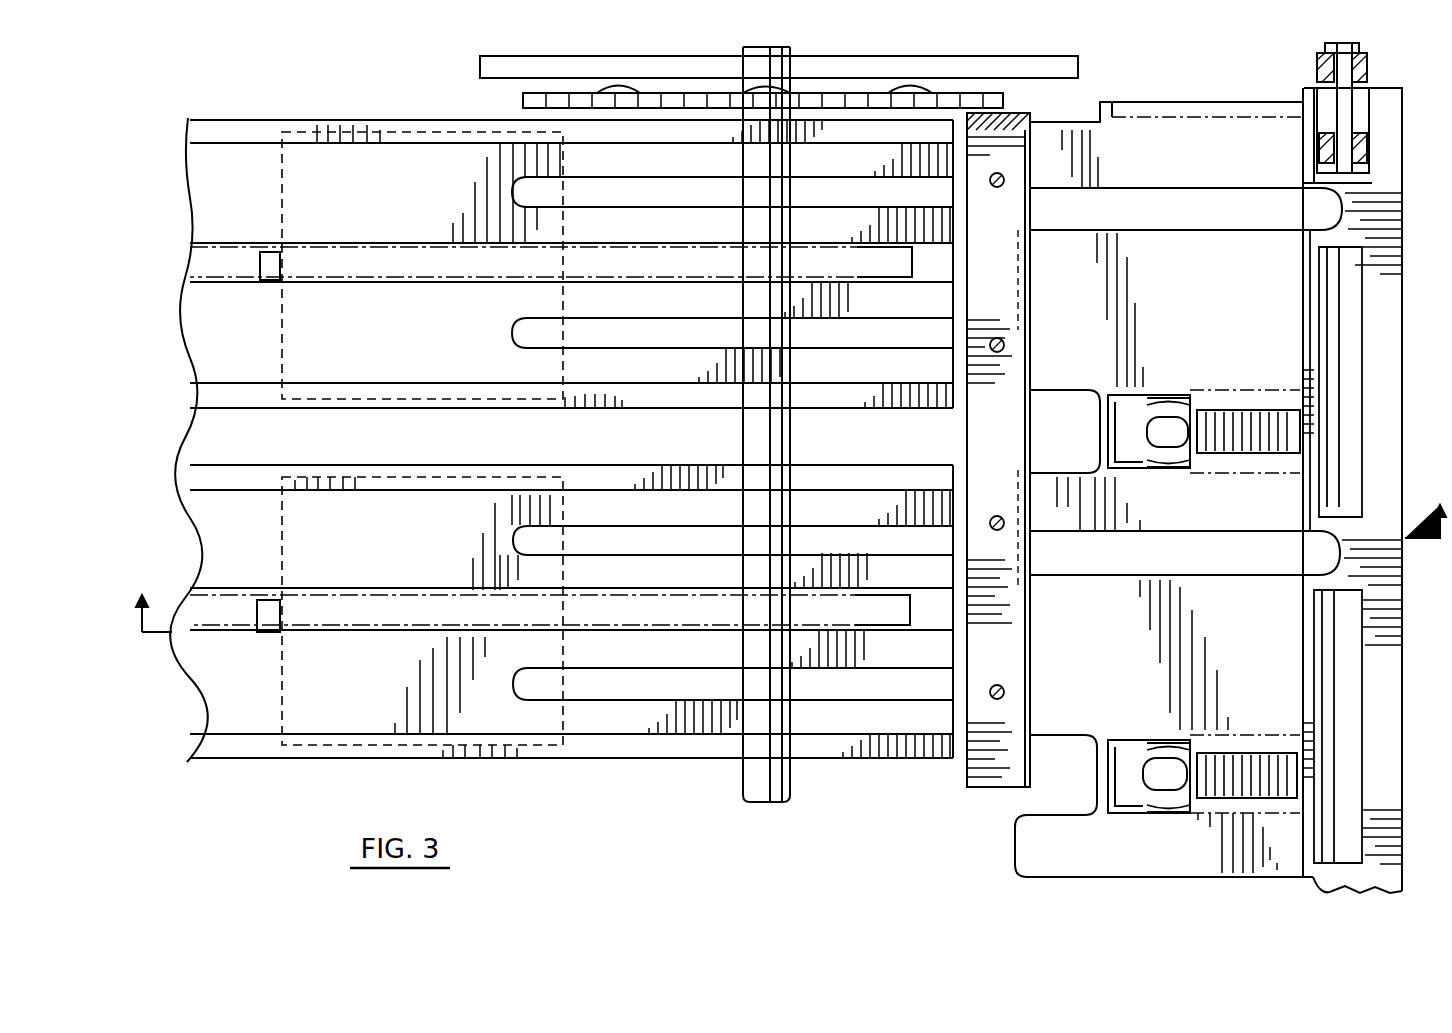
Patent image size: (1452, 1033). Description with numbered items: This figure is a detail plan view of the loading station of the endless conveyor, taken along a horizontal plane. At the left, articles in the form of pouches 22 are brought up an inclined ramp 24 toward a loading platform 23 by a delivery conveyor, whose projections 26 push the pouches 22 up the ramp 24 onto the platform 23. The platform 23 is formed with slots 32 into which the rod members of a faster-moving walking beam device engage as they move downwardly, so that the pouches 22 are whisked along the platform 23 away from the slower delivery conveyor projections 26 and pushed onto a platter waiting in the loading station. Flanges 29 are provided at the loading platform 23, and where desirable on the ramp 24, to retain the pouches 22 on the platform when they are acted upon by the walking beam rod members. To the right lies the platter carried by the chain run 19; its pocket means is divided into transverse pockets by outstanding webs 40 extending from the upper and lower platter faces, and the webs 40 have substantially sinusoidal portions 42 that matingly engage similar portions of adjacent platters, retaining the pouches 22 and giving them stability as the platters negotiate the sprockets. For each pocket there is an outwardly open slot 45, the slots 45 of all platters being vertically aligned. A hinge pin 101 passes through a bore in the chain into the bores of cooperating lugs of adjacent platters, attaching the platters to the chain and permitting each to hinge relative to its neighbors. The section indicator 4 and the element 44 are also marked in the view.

The section line 4- 4 is at (791, 548).
The chain run 19 is at (1372, 65).
The pouch 22 is at (385, 178).
The loading platform 23 is at (735, 720).
The inclined ramp 24 is at (228, 715).
The projection 26 is at (270, 256).
The flange 29 is at (252, 128).
The slot 32 is at (679, 182).
The web 40 is at (1259, 103).
The sinusoidal portion 42 is at (1170, 397).
The housing 44 is at (1220, 802).
The outwardly open slot 45 is at (1320, 210).
The hinge pin 101 is at (1355, 50).